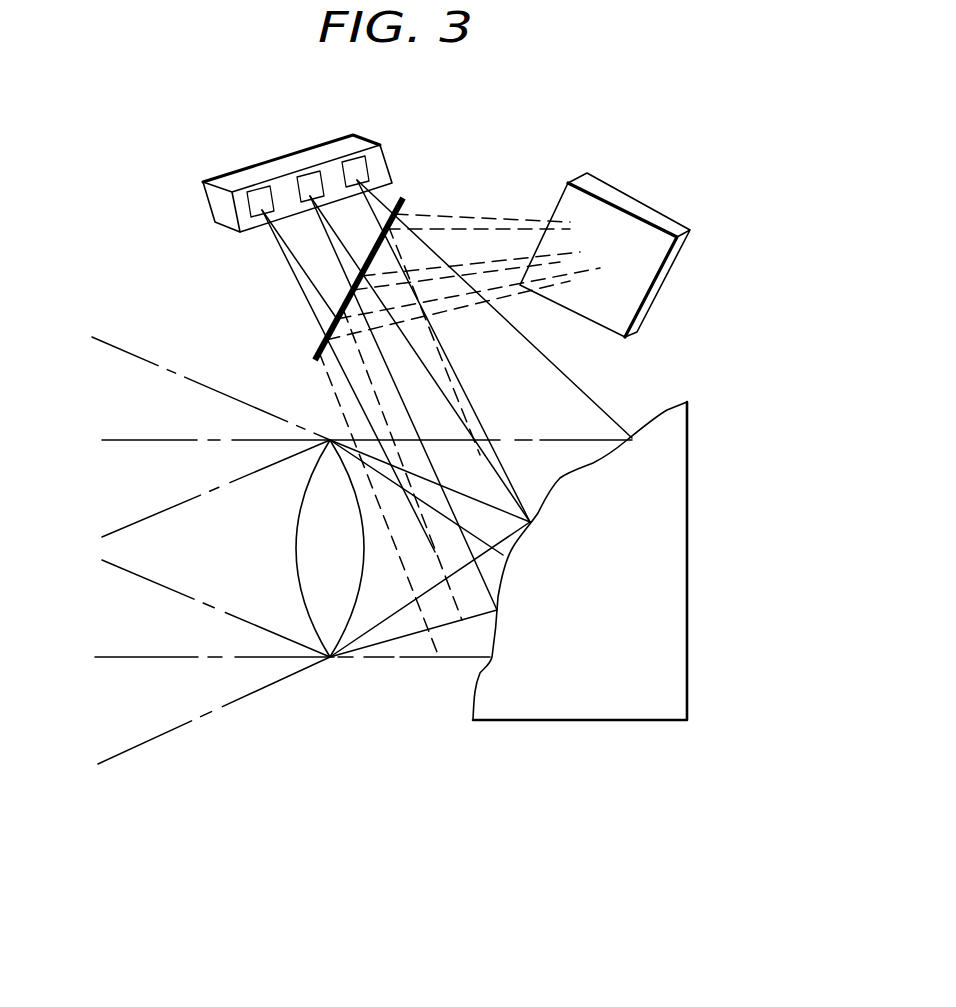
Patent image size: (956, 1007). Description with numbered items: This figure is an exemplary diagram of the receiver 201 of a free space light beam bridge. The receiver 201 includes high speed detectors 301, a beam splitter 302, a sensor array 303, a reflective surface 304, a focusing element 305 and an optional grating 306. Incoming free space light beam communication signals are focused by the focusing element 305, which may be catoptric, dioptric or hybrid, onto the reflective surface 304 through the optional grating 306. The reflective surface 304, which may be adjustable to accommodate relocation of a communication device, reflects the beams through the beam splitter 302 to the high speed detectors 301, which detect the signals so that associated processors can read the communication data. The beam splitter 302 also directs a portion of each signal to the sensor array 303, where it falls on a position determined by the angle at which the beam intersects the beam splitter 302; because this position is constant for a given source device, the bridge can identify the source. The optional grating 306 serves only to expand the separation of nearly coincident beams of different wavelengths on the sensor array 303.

The receiver 201 is at (128, 144).
The high speed detectors 301 is at (320, 146).
The beam splitter 302 is at (318, 351).
The sensor array 303 is at (645, 200).
The reflective surface 304 is at (690, 560).
The focusing element 305 is at (330, 661).
The optional grating 306 is at (437, 668).